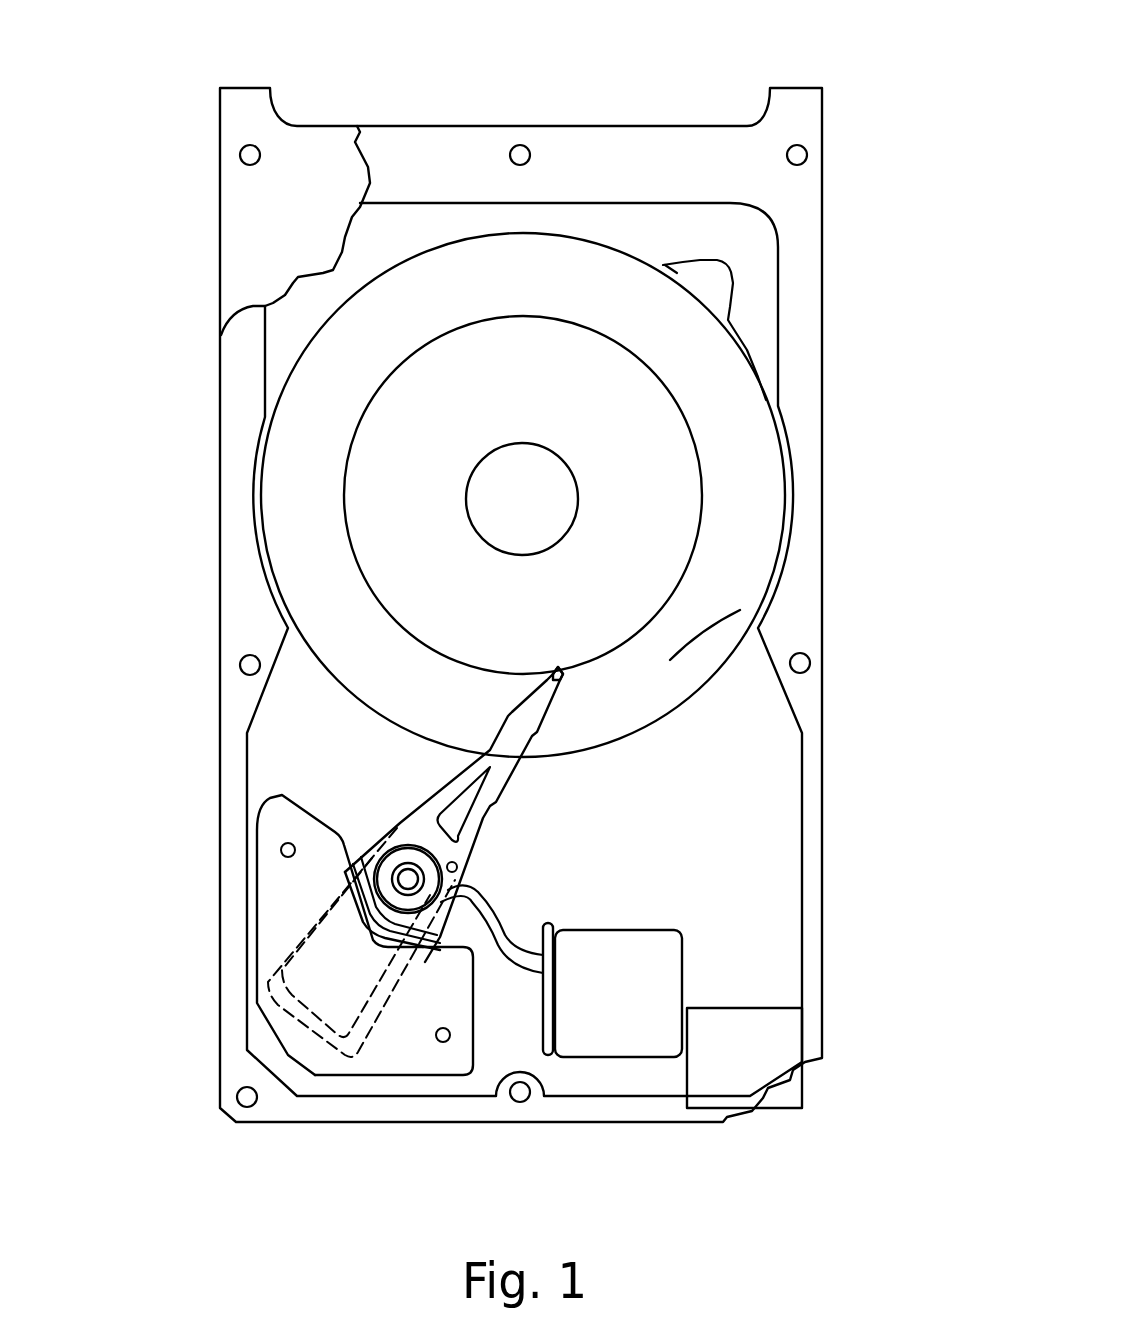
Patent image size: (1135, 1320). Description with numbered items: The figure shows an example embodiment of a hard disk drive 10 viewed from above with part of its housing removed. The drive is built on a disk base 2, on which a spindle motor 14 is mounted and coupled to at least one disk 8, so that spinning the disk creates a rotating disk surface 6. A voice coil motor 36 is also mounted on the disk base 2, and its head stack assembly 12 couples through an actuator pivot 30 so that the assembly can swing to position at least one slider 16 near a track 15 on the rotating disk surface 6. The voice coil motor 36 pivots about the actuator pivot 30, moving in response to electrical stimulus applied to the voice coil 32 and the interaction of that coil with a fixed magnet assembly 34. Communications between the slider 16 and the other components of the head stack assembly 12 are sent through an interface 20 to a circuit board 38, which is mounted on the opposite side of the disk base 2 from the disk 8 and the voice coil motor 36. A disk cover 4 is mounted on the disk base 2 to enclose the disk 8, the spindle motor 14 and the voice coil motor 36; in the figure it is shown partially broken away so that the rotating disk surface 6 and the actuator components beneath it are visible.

The hard disk drive 10 is at (407, 82).
The disk base 2 is at (853, 50).
The disk cover 4 is at (260, 217).
The rotating disk surface 6 is at (638, 315).
The spindle motor 14 is at (522, 499).
The track 15 is at (690, 570).
The disk 8 is at (690, 680).
The slider 16 is at (560, 671).
The head stack assembly 12 is at (400, 775).
The actuator pivot 30 is at (409, 862).
The voice coil 32 is at (330, 907).
The voice coil motor 36 is at (238, 979).
The fixed magnet assembly 34 is at (452, 1008).
The interface 20 is at (612, 990).
The circuit board 38 is at (795, 1075).